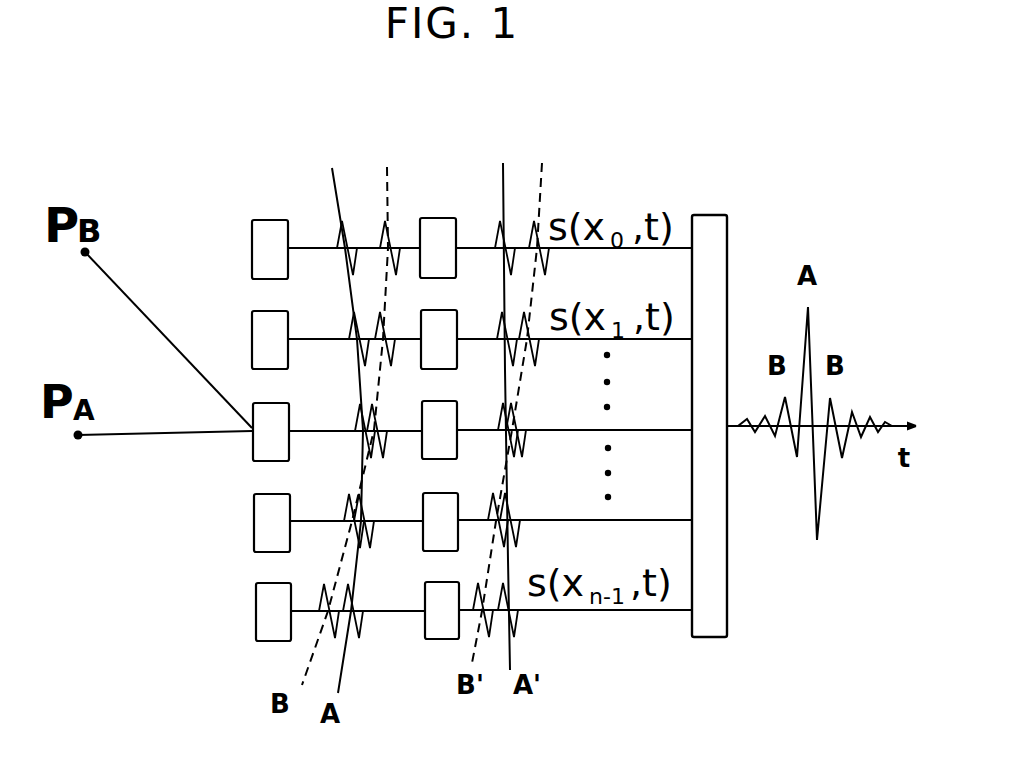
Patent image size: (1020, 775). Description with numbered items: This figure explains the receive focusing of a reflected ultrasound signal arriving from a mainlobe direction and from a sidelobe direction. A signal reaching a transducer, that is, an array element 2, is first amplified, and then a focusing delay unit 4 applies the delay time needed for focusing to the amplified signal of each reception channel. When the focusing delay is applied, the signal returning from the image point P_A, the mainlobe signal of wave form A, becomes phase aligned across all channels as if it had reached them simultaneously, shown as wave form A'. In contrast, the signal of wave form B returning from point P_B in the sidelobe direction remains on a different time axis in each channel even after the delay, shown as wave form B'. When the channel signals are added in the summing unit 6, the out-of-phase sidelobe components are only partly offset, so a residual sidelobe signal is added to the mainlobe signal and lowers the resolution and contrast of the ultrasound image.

The array element 2 is at (263, 452).
The focusing delay unit 4 is at (432, 452).
The summing unit 6 is at (698, 448).